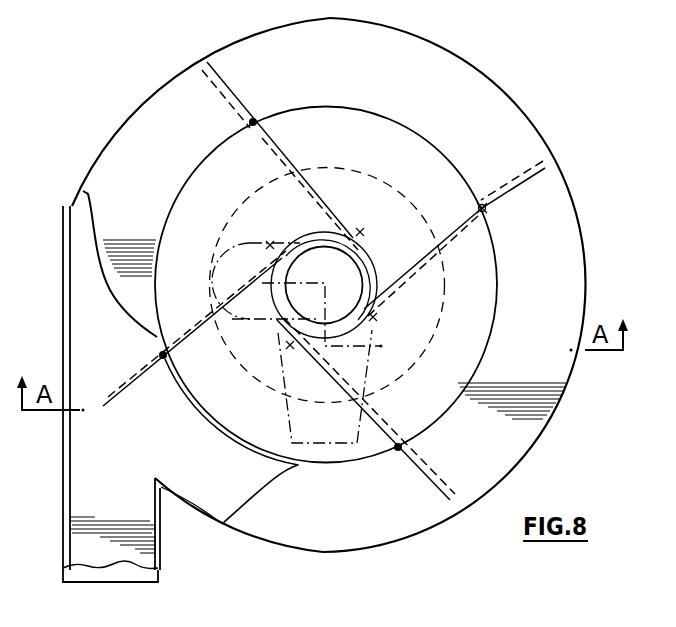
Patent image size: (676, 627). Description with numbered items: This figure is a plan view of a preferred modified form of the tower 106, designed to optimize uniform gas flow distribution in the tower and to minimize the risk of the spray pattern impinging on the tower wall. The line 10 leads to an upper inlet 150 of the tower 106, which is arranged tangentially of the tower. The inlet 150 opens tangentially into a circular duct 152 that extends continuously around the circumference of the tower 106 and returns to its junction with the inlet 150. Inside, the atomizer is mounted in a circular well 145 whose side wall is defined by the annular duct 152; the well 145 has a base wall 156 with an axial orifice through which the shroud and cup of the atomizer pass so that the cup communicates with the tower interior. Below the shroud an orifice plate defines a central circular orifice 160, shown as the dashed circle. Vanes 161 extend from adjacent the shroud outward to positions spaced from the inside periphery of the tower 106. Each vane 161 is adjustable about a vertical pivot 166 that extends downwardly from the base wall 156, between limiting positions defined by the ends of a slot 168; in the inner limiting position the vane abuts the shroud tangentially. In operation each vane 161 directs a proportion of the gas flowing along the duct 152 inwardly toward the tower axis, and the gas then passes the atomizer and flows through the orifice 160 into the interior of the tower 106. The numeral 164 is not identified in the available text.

The line 10 is at (63, 530).
The tower 106 is at (150, 97).
The circular well 145 is at (450, 392).
The upper inlet 150 is at (158, 533).
The circular duct 152 is at (478, 88).
The base wall 156 is at (210, 231).
The central circular orifice 160 is at (445, 287).
The vane 161 is at (290, 152).
The pivot point 164 is at (483, 206).
The vertical pivot 166 is at (254, 116).
The slot 168 is at (268, 378).